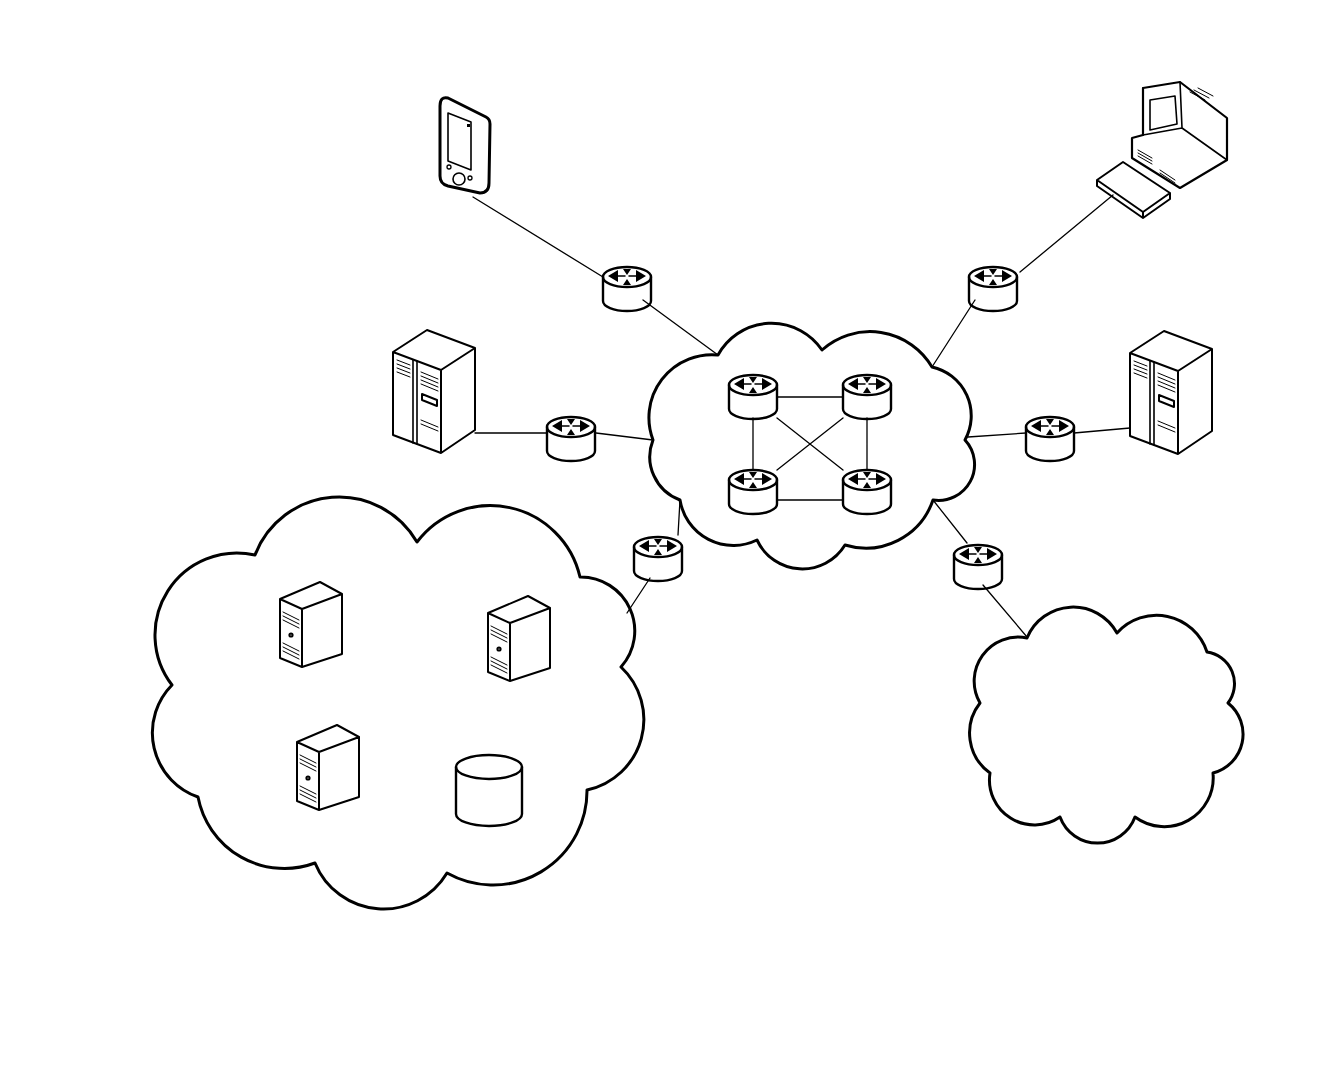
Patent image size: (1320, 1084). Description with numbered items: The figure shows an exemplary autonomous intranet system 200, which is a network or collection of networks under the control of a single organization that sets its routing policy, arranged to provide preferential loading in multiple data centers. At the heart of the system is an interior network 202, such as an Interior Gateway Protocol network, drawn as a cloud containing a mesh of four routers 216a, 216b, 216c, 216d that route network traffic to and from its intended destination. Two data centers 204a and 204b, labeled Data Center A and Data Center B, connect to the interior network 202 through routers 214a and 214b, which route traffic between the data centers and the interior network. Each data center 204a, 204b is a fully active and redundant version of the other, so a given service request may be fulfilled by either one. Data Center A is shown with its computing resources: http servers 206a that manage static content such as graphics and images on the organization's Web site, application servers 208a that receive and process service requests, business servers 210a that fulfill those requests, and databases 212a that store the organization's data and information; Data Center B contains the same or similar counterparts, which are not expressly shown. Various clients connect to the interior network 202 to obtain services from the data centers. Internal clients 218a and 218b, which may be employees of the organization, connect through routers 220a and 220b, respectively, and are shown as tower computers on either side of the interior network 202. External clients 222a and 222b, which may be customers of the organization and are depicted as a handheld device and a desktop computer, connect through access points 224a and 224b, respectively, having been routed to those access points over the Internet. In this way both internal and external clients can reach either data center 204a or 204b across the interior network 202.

The autonomous intranet system 200 is at (828, 207).
The interior network 202 is at (822, 347).
The data center 204a is at (273, 523).
The data center 204b is at (1195, 628).
The http servers 206a is at (278, 625).
The application servers 208a is at (297, 768).
The business servers 210a is at (487, 638).
The databases 212a is at (455, 783).
The router 214a is at (658, 584).
The router 214b is at (980, 592).
The router 216a is at (728, 392).
The router 216b is at (892, 392).
The router 216c is at (728, 503).
The router 216d is at (925, 487).
The internal client 218a is at (393, 373).
The internal client 218b is at (1212, 373).
The router 220a is at (572, 463).
The router 220b is at (1049, 463).
The external client 222a is at (440, 137).
The external client 222b is at (1210, 110).
The access point 224a is at (651, 292).
The access point 224b is at (968, 290).